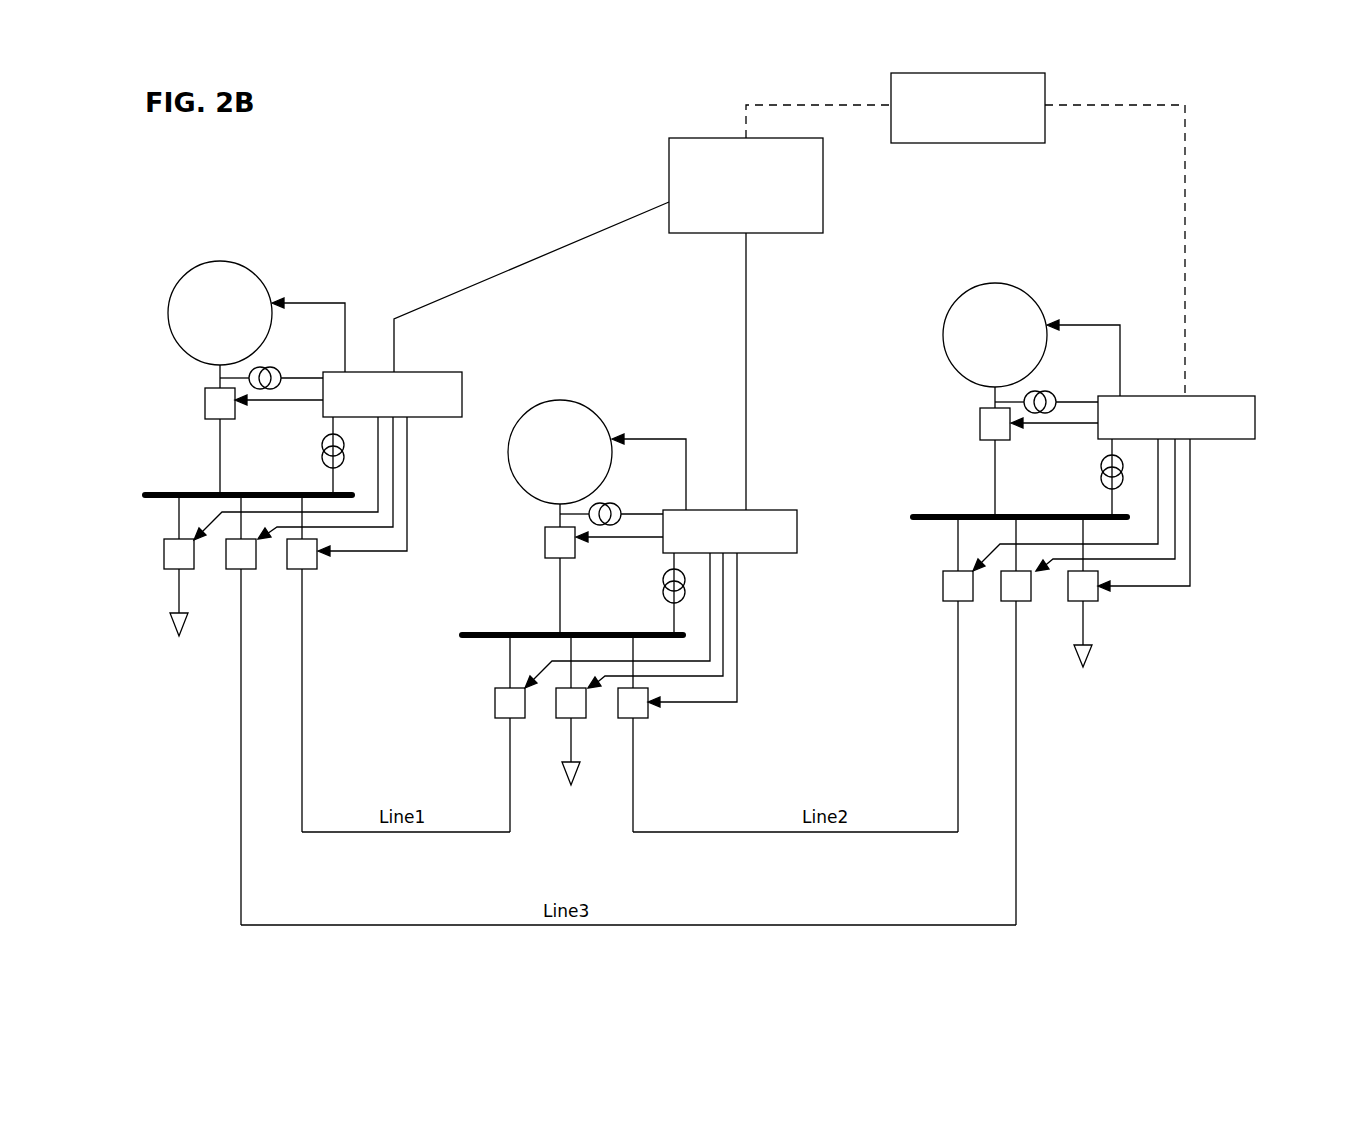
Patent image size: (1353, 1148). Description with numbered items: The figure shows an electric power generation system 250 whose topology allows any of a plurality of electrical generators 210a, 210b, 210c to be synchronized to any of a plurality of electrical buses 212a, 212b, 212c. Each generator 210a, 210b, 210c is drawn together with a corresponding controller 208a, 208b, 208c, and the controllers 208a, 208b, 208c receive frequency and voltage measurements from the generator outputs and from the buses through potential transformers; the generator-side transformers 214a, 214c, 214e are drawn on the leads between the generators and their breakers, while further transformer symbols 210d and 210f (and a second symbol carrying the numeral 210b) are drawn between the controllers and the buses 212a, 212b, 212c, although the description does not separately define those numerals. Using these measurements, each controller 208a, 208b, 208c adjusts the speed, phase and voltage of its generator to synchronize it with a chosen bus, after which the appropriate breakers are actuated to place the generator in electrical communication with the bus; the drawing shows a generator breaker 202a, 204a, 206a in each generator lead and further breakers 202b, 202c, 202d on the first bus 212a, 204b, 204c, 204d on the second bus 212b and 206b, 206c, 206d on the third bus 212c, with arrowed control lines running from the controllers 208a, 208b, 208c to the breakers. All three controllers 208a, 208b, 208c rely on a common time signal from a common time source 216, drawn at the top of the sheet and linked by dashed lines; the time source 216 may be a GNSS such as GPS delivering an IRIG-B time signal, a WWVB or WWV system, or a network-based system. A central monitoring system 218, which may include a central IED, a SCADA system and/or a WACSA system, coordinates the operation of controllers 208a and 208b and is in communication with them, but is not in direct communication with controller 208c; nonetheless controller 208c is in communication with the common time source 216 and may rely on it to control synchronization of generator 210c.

The system 250 is at (421, 203).
The common time source 216 is at (981, 145).
The central monitoring system 218 is at (683, 233).
The electrical generator 210a is at (183, 276).
The electrical generator 210b is at (322, 455).
The electrical generator 210c is at (947, 308).
The current transformer 210d is at (663, 593).
The current transformer 210f is at (1101, 475).
The potential transformer 214a is at (272, 368).
The potential transformer 214c is at (614, 504).
The potential transformer 214e is at (1050, 391).
The circuit breaker 202a is at (205, 404).
The circuit breaker 202b is at (170, 570).
The circuit breaker 202c is at (235, 570).
The circuit breaker 202d is at (297, 570).
The circuit breaker 204a is at (545, 543).
The circuit breaker 204b is at (502, 720).
The circuit breaker 204c is at (565, 720).
The circuit breaker 204d is at (628, 720).
The circuit breaker 206a is at (979, 425).
The circuit breaker 206b is at (950, 602).
The circuit breaker 206c is at (1008, 602).
The circuit breaker 206d is at (1075, 602).
The controller 208a is at (462, 392).
The controller 208b is at (797, 530).
The controller 208c is at (1255, 405).
The electrical bus 212a is at (140, 500).
The electrical bus 212b is at (470, 640).
The electrical bus 212c is at (920, 522).